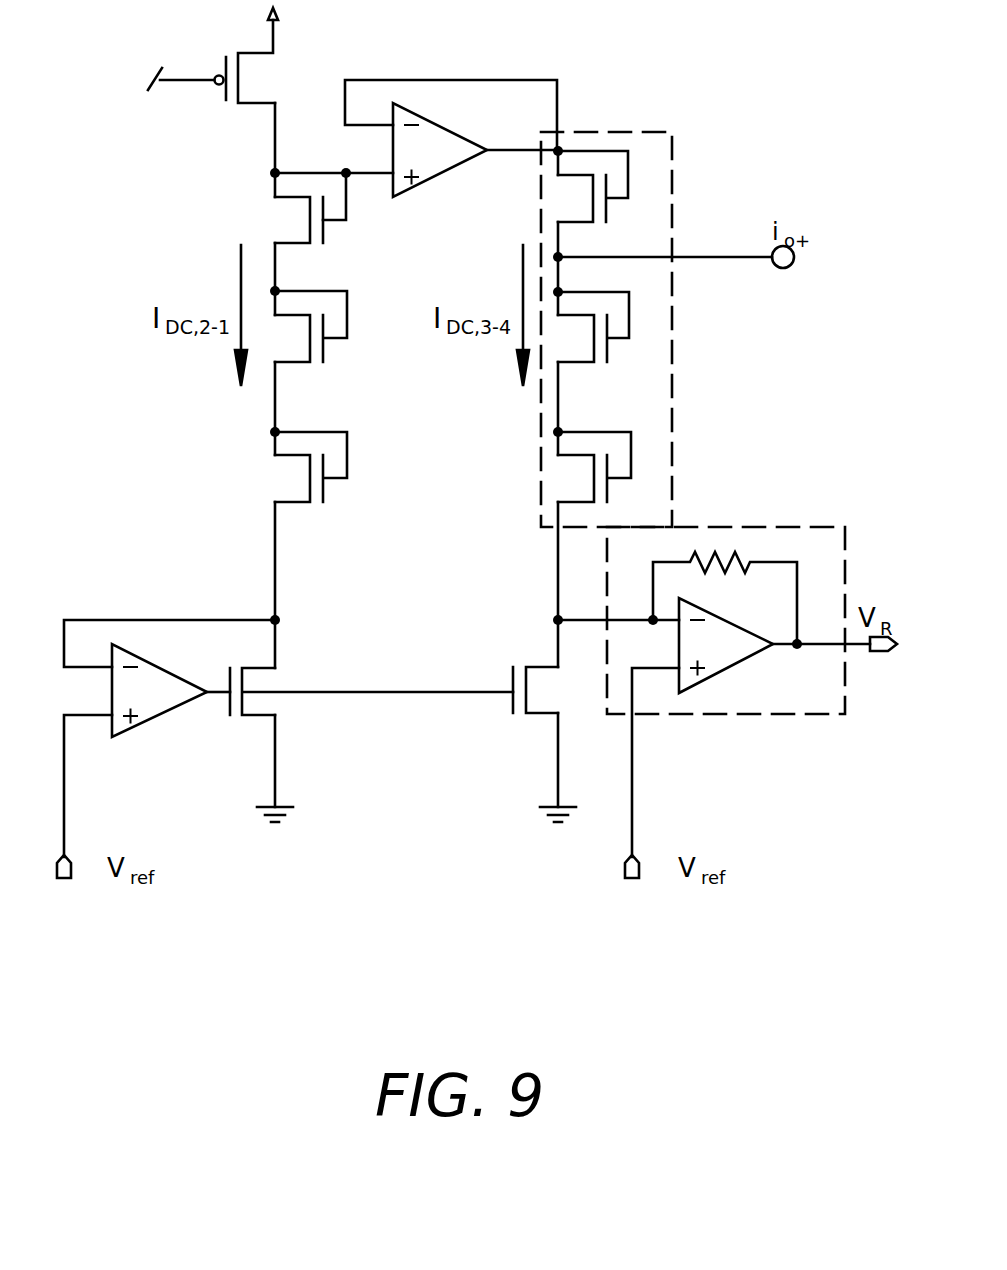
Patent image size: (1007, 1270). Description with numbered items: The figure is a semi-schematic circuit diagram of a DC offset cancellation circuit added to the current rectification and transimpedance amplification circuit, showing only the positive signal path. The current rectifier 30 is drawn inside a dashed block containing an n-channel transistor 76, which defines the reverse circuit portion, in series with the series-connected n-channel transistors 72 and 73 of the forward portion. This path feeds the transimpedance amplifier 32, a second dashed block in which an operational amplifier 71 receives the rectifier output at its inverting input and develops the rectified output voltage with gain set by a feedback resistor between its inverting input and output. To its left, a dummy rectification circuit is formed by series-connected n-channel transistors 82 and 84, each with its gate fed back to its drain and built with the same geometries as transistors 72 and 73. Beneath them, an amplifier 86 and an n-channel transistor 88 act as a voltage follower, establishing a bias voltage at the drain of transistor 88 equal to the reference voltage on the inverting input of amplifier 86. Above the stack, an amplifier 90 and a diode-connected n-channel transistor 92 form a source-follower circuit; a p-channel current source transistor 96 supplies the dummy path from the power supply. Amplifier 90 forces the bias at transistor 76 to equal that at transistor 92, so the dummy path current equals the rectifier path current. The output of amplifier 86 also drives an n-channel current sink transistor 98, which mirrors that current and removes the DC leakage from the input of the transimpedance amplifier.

The p-channel current source transistor 96 is at (253, 62).
The n-channel transistor 92 is at (292, 226).
The amplifier 90 is at (430, 165).
The n-channel transistor 76 is at (572, 205).
The n-channel transistor 82 is at (281, 345).
The n-channel transistor 84 is at (290, 482).
The n-channel transistor 72 is at (572, 345).
The n-channel transistor 73 is at (575, 482).
The current rectifier 30 is at (674, 360).
The transimpedance amplifier 32 is at (790, 525).
The n-channel transistor 88 is at (262, 681).
The amplifier 86 is at (163, 700).
The n-channel current sink transistor 98 is at (547, 702).
The operational amplifier 71 is at (733, 655).